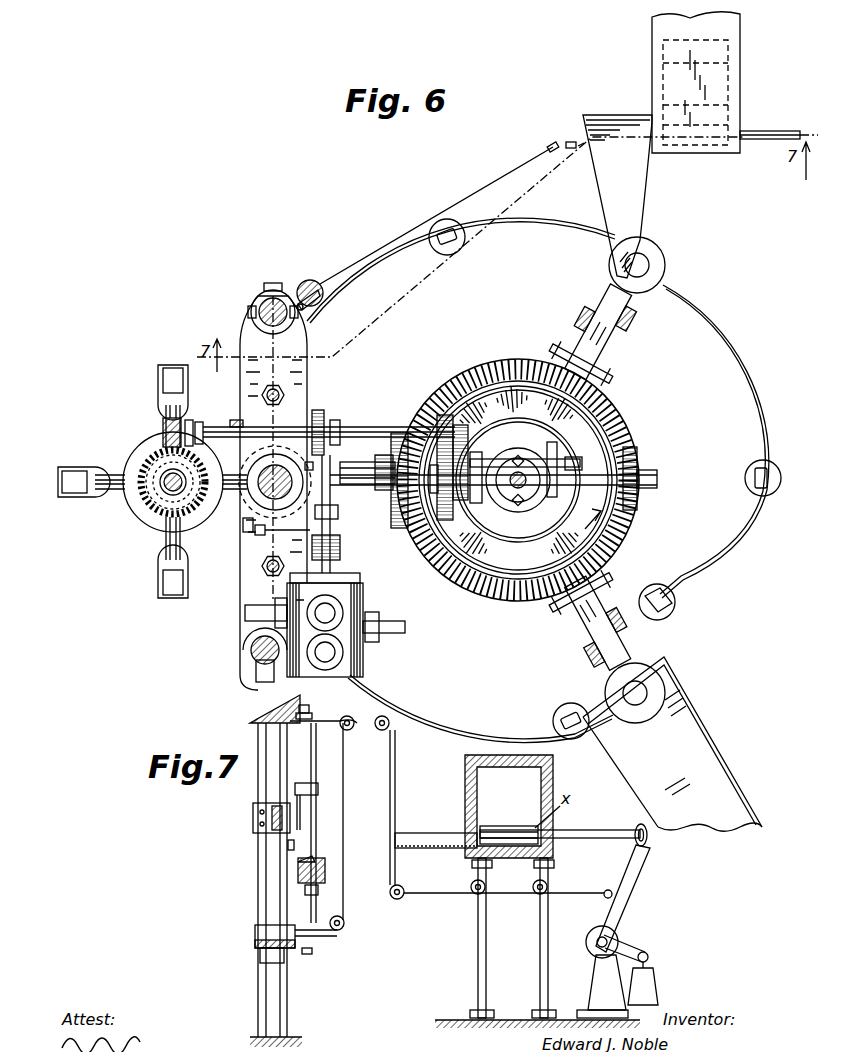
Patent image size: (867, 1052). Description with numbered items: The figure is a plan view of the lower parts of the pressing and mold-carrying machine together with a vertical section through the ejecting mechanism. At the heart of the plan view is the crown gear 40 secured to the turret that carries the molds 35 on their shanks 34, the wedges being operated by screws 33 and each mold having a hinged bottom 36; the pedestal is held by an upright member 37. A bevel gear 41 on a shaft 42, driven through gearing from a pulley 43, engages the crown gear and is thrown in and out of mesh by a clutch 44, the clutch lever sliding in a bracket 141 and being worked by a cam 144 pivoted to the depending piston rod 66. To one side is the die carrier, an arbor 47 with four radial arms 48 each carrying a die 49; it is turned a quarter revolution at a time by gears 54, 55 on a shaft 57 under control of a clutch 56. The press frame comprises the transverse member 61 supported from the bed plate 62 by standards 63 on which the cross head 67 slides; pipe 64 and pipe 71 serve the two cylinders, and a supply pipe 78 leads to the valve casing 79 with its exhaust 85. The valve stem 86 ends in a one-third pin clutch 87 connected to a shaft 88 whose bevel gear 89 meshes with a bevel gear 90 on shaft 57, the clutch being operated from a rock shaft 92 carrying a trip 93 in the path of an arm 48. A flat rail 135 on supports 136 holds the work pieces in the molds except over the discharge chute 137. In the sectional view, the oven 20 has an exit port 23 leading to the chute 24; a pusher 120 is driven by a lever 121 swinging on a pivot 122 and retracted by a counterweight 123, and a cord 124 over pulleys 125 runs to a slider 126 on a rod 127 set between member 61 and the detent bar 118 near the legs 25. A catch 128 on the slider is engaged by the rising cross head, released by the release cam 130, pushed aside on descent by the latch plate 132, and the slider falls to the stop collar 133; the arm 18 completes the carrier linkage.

In FIG. 6, the arm 18 is at (125, 475).
In FIG. 6, the oven or heating apparatus 20 is at (742, 101).
In FIG. 7, the oven or heating apparatus 20 is at (509, 806).
In FIG. 7, the exit port 23 is at (478, 832).
In FIG. 6, the slide-way or chute 24 is at (617, 196).
In FIG. 7, the slide-way or chute 24 is at (425, 851).
In FIG. 7, the legs 25 is at (538, 869).
In FIG. 6, the screws 33 is at (625, 594).
In FIG. 6, the shanks of molds 34 is at (598, 477).
In FIG. 6, the molds 35 is at (660, 250).
In FIG. 6, the hinged bottom 36 is at (642, 641).
In FIG. 6, the upright member 37 is at (523, 487).
In FIG. 6, the crown gear 40 is at (618, 413).
In FIG. 6, the bevel gear 41 is at (396, 426).
In FIG. 6, the shaft 42 is at (465, 520).
In FIG. 6, the pulley 43 is at (640, 456).
In FIG. 6, the clutch 44 is at (353, 514).
In FIG. 6, the arbor or frame 47 is at (152, 526).
In FIG. 6, the radial arms 48 is at (225, 506).
In FIG. 6, the die or former 49 is at (173, 365).
In FIG. 6, the gear 54 is at (157, 500).
In FIG. 6, the gear 55 is at (163, 425).
In FIG. 6, the clutch 56 is at (196, 420).
In FIG. 6, the shaft 57 is at (248, 418).
In FIG. 7, the member 61 is at (310, 708).
In FIG. 6, the bed plate 62 is at (273, 493).
In FIG. 7, the bed plate 62 is at (290, 873).
In FIG. 6, the standards 63 is at (262, 303).
In FIG. 7, the standards 63 is at (262, 961).
In FIG. 6, the pressure and exhaust pipe 64 is at (345, 613).
In FIG. 6, the depending rod 66 is at (262, 475).
In FIG. 6, the cross head 67 is at (278, 470).
In FIG. 7, the cross head 67 is at (253, 819).
In FIG. 6, the pressure and exhaust pipe 71 is at (405, 629).
In FIG. 6, the pipe 78 is at (345, 656).
In FIG. 6, the casing 79 is at (365, 657).
In FIG. 6, the exhaust 85 is at (245, 614).
In FIG. 6, the stem 86 is at (340, 551).
In FIG. 6, the one-third pin clutch 87 is at (338, 521).
In FIG. 6, the shaft 88 is at (348, 467).
In FIG. 6, the bevel gear 89 is at (340, 423).
In FIG. 6, the bevel gear 90 is at (318, 412).
In FIG. 6, the rock shaft 92 is at (255, 533).
In FIG. 6, the trip 93 is at (243, 531).
In FIG. 7, the detent bar 118 is at (300, 946).
In FIG. 6, the pusher 120 is at (752, 140).
In FIG. 7, the pusher 120 is at (560, 821).
In FIG. 7, the lever 121 is at (632, 871).
In FIG. 7, the pivot 122 is at (598, 943).
In FIG. 7, the counter weight 123 is at (652, 971).
In FIG. 6, the cord 124 is at (410, 241).
In FIG. 7, the cord 124 is at (442, 900).
In FIG. 6, the pulleys 125 is at (448, 213).
In FIG. 7, the pulleys 125 is at (383, 731).
In FIG. 6, the slider 126 is at (305, 280).
In FIG. 7, the slider 126 is at (325, 873).
In FIG. 7, the rod 127 is at (318, 827).
In FIG. 6, the catch 128 is at (320, 306).
In FIG. 7, the catch 128 is at (298, 867).
In FIG. 7, the release cam 130 is at (297, 811).
In FIG. 7, the latch plate 132 is at (288, 847).
In FIG. 7, the stop collar 133 is at (305, 891).
In FIG. 6, the flat rail 135 is at (720, 303).
In FIG. 6, the supports 136 is at (462, 250).
In FIG. 6, the discharge chute 137 is at (672, 744).
In FIG. 6, the bracket 141 is at (370, 484).
In FIG. 6, the cam 144 is at (311, 457).